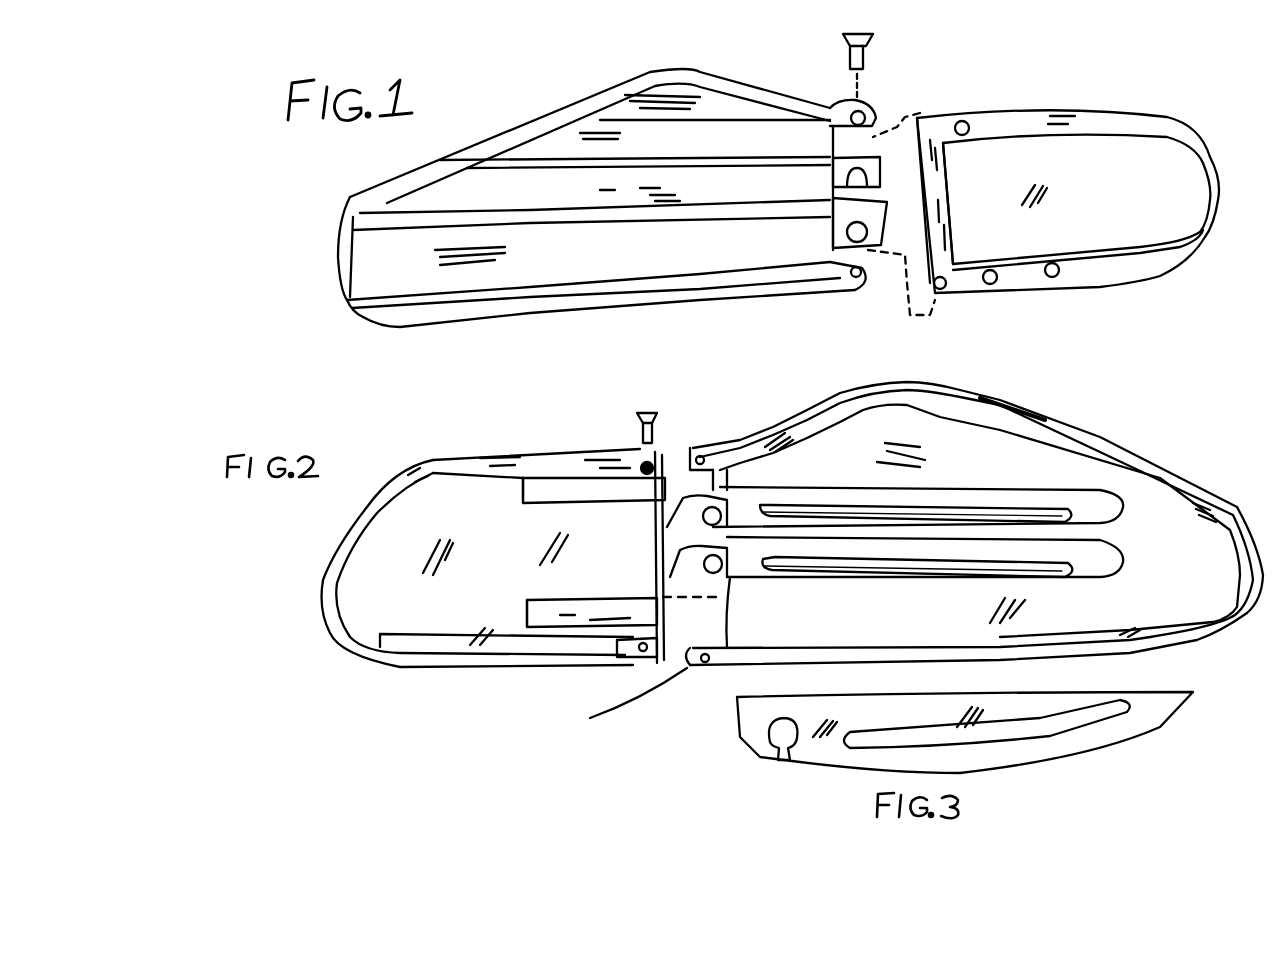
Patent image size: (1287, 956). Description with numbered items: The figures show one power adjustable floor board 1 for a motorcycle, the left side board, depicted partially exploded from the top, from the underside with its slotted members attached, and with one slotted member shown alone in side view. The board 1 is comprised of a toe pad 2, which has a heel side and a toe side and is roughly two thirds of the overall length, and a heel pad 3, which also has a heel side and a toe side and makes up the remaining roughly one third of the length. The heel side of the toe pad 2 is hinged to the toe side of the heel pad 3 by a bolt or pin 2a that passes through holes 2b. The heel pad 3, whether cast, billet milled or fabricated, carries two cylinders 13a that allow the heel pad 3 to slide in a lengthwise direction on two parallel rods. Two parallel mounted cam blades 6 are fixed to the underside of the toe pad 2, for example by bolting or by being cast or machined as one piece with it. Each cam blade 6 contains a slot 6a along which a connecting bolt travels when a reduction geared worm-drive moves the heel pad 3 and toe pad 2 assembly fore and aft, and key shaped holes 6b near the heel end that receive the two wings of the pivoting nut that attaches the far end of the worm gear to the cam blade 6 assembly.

In FIG. 1, the board 1 is at (252, 270).
In FIG. 2, the board 1 is at (524, 777).
In FIG. 1, the toe pad 2 is at (515, 125).
In FIG. 2, the toe pad 2 is at (1165, 477).
In FIG. 1, the bolt or pin 2a is at (872, 34).
In FIG. 2, the bolt or pin 2a is at (657, 412).
In FIG. 1, the holes 2b is at (862, 100).
In FIG. 1, the heel pad 3 is at (1040, 108).
In FIG. 2, the heel pad 3 is at (457, 668).
In FIG. 2, the cam blades 6 is at (1057, 497).
In FIG. 3, the cam blades 6 is at (934, 753).
In FIG. 3, the slot 6a is at (1097, 720).
In FIG. 3, the key shaped holes 6b is at (780, 760).
In FIG. 2, the cylinders 13a is at (535, 508).